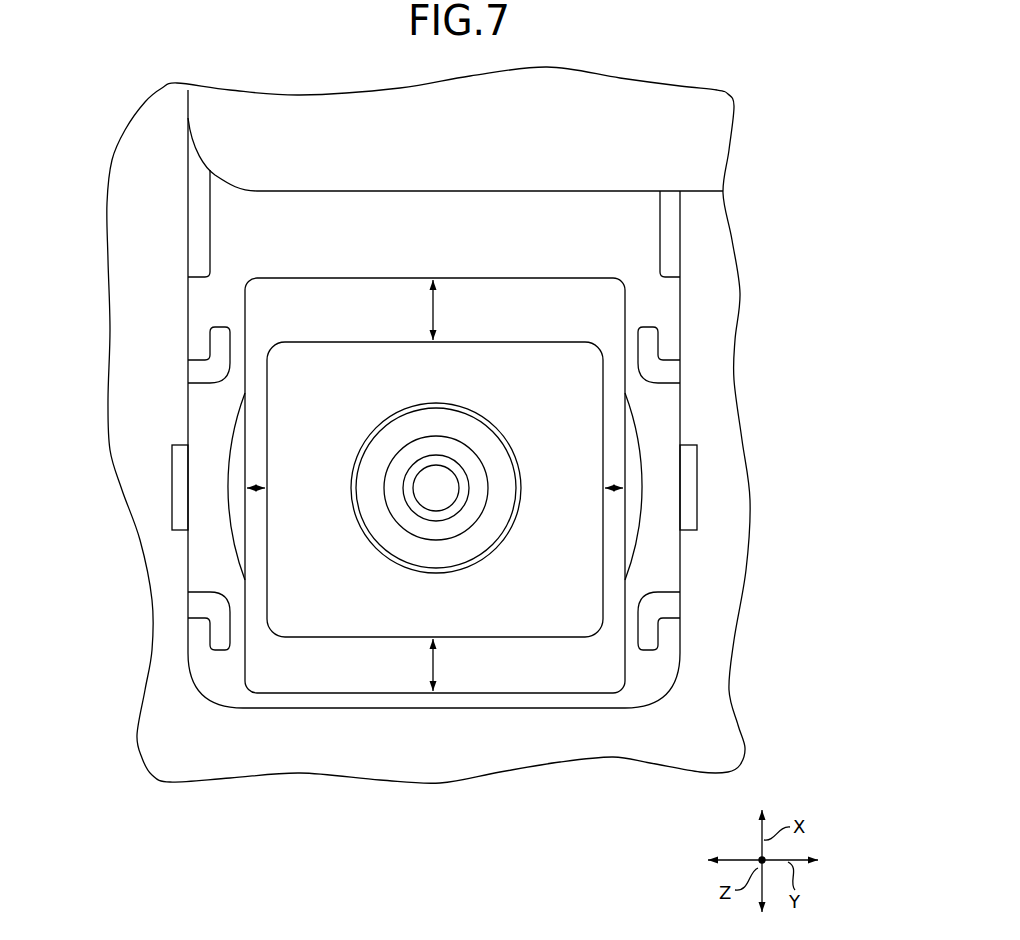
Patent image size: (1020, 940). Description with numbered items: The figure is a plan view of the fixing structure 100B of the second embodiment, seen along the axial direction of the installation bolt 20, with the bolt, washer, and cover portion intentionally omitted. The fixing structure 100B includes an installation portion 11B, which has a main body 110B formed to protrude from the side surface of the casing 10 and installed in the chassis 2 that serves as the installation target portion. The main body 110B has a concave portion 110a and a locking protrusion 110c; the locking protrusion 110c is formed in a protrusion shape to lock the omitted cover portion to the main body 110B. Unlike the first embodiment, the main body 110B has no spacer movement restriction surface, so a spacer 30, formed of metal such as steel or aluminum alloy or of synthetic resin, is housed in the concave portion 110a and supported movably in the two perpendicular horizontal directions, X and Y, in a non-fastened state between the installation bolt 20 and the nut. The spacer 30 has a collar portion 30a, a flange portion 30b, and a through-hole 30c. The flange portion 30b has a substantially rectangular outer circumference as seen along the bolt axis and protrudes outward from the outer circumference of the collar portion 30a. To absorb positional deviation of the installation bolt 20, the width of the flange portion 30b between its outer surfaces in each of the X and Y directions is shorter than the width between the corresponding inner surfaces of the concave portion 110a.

The chassis 2 is at (688, 728).
The casing 10 is at (690, 155).
The fixing structure 100B is at (768, 251).
The installation portion 11B is at (675, 681).
The main body 110B is at (650, 670).
The concave portion 110a is at (532, 310).
The locking protrusion 110c is at (170, 487).
The spacer 30 is at (375, 360).
The collar portion 30a is at (468, 545).
The flange portion 30b is at (543, 550).
The through-hole 30c is at (467, 457).
The installation bolt 20 is at (423, 480).